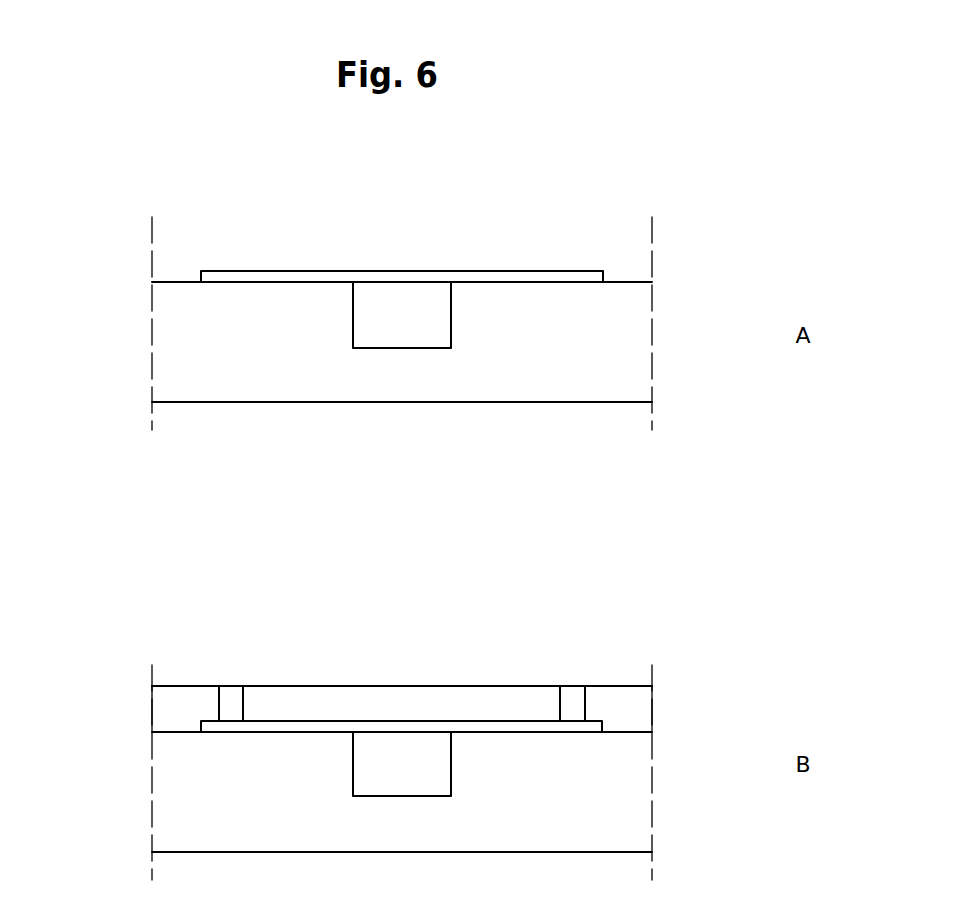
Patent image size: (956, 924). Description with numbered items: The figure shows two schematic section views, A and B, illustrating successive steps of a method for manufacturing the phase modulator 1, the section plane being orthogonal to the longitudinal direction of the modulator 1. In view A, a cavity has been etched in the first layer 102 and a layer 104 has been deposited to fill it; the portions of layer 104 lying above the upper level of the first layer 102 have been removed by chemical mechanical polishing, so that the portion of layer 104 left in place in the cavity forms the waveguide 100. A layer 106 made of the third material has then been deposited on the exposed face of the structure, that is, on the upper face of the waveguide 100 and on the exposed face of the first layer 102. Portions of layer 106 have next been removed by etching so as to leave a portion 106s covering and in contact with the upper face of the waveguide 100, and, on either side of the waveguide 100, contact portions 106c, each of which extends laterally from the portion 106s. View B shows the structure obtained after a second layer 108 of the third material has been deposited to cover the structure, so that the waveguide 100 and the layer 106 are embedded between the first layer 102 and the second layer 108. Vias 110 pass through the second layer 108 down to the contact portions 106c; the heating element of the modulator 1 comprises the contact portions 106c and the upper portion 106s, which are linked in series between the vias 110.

The modulator 1 is at (168, 649).
The waveguide 100 is at (384, 326).
The first layer 102 is at (630, 368).
The layer 104 is at (453, 336).
The layer 106 is at (612, 275).
The contact portions 106c is at (297, 275).
The upper portion 106s is at (411, 276).
The second layer 108 is at (642, 708).
The vias 110 is at (228, 686).